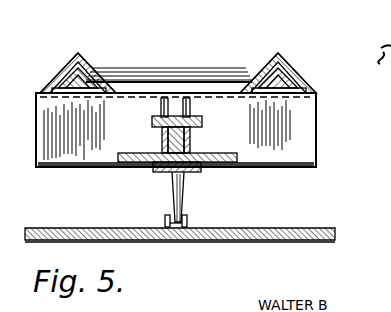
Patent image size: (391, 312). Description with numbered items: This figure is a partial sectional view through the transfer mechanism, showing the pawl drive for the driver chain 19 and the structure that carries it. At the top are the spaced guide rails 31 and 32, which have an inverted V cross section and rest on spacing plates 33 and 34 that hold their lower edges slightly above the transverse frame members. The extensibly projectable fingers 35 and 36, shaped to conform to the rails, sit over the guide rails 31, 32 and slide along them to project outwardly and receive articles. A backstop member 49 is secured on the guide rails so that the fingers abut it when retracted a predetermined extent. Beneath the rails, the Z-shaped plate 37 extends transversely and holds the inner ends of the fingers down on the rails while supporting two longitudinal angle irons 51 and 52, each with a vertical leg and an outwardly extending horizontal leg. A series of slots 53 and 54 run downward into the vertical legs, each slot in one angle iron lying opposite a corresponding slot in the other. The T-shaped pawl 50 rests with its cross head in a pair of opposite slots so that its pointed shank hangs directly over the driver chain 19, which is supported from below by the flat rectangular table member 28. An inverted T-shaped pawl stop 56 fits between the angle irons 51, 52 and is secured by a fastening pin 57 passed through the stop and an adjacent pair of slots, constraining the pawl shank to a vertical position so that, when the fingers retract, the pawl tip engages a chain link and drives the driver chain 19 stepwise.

The driver chain 19 is at (188, 219).
The flat rectangular table member 28 is at (303, 242).
The guide rail 31 is at (297, 76).
The guide rail 32 is at (58, 88).
The spacing plate 33 is at (290, 90).
The spacing plate 34 is at (67, 89).
The extensibly projectable finger 35 is at (288, 68).
The extensibly projectable finger 36 is at (67, 68).
The Z-shaped connecting plate 37 is at (310, 147).
The backstop member 49 is at (168, 70).
The pawl 50 is at (185, 190).
The angle iron 51 is at (190, 142).
The angle iron 52 is at (162, 136).
The slot 53 is at (191, 103).
The slot 54 is at (161, 105).
The pawl stop 56 is at (168, 174).
The fastening pin 57 is at (203, 121).